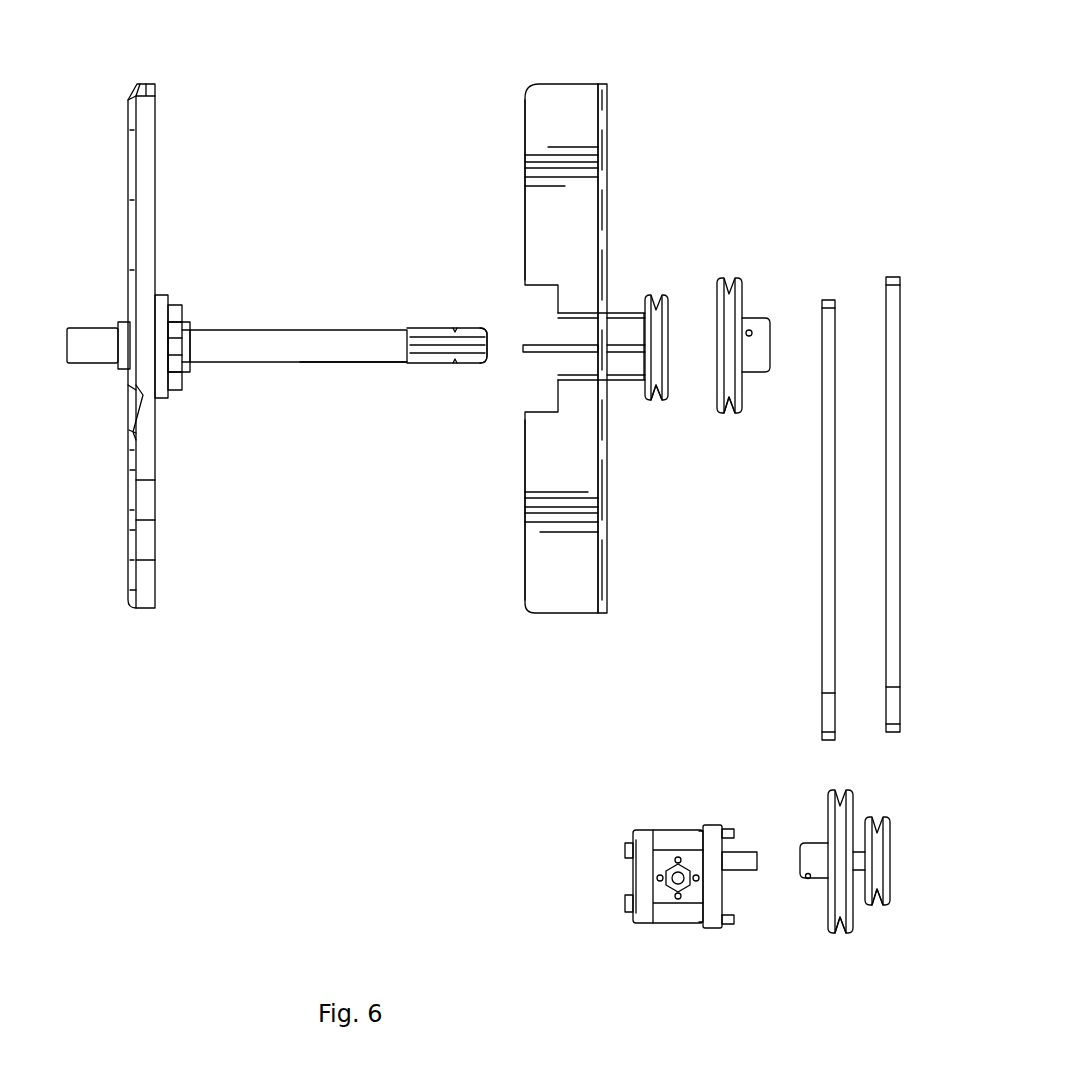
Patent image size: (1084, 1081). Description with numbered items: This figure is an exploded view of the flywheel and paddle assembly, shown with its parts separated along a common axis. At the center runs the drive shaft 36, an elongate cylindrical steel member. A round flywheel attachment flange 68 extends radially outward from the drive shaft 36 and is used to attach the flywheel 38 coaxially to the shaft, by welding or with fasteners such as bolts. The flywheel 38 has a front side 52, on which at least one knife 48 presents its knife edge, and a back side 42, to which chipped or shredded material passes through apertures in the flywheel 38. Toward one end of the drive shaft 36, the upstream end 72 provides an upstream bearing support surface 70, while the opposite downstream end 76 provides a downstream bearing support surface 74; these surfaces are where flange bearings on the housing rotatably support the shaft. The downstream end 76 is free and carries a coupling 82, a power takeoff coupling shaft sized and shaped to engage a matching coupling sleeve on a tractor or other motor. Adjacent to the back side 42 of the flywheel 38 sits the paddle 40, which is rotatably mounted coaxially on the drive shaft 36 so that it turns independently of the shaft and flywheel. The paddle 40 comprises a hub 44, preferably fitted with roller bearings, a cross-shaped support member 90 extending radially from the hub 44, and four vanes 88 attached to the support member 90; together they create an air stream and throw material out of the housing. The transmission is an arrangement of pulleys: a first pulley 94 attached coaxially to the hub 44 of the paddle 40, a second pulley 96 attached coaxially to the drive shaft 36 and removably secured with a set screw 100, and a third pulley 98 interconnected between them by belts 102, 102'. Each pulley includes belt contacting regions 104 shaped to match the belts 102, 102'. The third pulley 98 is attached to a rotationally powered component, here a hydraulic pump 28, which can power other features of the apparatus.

The hydraulic pump 28 is at (665, 830).
The drive shaft 36 is at (262, 330).
The flywheel 38 is at (150, 598).
The paddle 40 is at (598, 84).
The back side 42 is at (152, 140).
The hub 44 is at (558, 323).
The knife 48 is at (128, 573).
The front side 52 is at (128, 157).
The flywheel attachment flange 68 is at (168, 300).
The upstream bearing support surface 70 is at (90, 328).
The upstream end 72 is at (67, 345).
The downstream bearing support surface 74 is at (380, 362).
The downstream end 76 is at (488, 352).
The coupling 82 is at (432, 328).
The vane 88 is at (538, 120).
The support member 90 is at (605, 183).
The first pulley 94 is at (660, 298).
The second pulley 96 is at (730, 283).
The third pulley 98 is at (890, 848).
The set screw 100 is at (750, 330).
The belt 102 is at (868, 504).
The belt 102' is at (789, 520).
The belt contacting region 104 is at (657, 400).